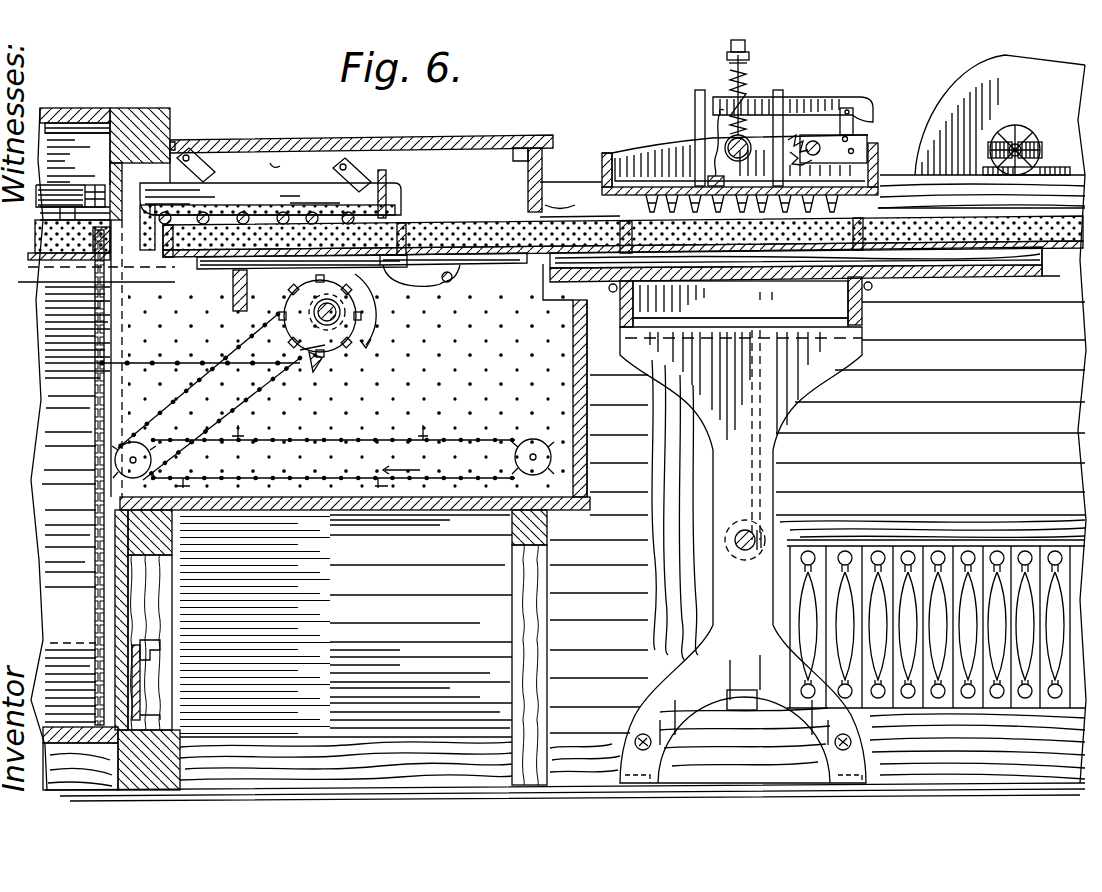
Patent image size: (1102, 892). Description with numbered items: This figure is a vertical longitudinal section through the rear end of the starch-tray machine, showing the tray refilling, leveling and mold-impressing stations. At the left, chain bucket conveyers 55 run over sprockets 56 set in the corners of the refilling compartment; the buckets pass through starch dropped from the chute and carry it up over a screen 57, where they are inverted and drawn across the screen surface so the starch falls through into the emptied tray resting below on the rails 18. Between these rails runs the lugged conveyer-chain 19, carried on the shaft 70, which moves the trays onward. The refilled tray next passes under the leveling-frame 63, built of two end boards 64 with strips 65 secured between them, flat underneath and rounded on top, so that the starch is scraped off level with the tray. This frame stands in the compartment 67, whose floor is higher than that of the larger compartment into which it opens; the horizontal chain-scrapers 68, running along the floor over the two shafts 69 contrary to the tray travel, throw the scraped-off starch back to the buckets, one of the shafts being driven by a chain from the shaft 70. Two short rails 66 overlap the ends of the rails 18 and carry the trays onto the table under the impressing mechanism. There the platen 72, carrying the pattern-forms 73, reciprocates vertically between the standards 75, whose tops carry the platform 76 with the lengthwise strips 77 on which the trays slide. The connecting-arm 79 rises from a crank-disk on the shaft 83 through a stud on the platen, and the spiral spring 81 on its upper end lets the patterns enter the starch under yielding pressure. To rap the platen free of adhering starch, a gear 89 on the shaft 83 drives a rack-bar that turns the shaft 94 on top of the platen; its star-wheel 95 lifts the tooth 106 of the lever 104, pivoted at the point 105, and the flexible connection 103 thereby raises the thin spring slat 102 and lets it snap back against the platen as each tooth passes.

The chain bucket conveyers 55 is at (70, 190).
The screen 57 is at (30, 256).
The sprockets 56 is at (97, 640).
The leveling-frame 63 is at (274, 170).
The end boards 64 is at (300, 196).
The strips 65 is at (347, 214).
The shaft 70 is at (318, 312).
The rails 18 is at (396, 270).
The conveyer-chains 19 is at (308, 362).
The short rails 66 is at (506, 266).
The compartment 67 is at (405, 380).
The horizontal chain-scrapers 68 is at (190, 482).
The shafts 69 is at (116, 460).
The platen 72 is at (630, 162).
The pattern-forms 73 is at (625, 198).
The spring slat or bar 102 is at (708, 178).
The flexible connection 103 is at (716, 118).
The connecting-arm 79 is at (744, 38).
The spiral spring 81 is at (748, 70).
The lever 104 is at (760, 97).
The tooth 106 is at (800, 138).
The star-wheel or ratchet-wheel 95 is at (812, 145).
The pivot point 105 is at (855, 110).
The shaft 94 is at (867, 139).
The strips 77 is at (992, 255).
The platform 76 is at (1030, 284).
The standards 75 is at (872, 350).
The shaft 83 is at (755, 533).
The gear 89 is at (656, 524).